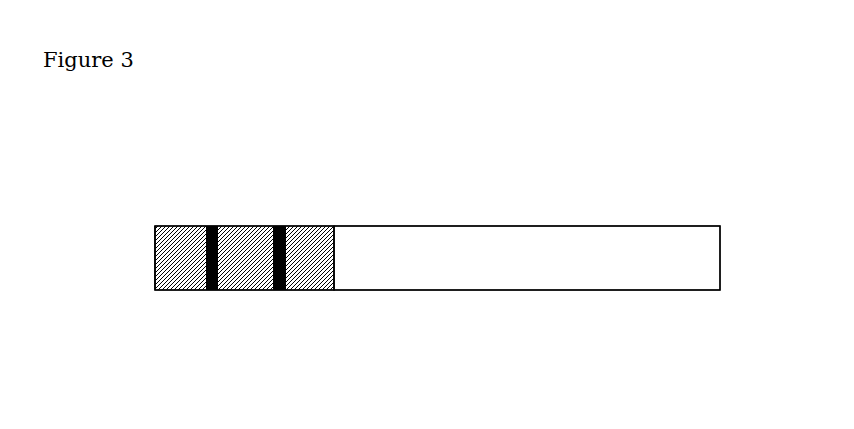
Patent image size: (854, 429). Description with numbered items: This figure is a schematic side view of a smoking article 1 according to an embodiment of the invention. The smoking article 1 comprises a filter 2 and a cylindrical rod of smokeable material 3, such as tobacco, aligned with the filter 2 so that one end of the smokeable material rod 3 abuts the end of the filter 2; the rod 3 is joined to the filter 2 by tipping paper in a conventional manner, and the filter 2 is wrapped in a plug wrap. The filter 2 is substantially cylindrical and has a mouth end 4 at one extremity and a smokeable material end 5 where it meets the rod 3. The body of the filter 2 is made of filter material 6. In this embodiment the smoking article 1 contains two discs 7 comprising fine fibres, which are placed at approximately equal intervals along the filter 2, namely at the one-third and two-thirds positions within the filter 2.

The smoking article 1 is at (348, 323).
The filter 2 is at (246, 277).
The cylindrical rod of smokeable material 3 is at (504, 237).
The mouth end 4 is at (155, 290).
The smokeable material end 5 is at (335, 227).
The filter material 6 is at (230, 226).
The disc comprising fine fibres 7 is at (208, 291).